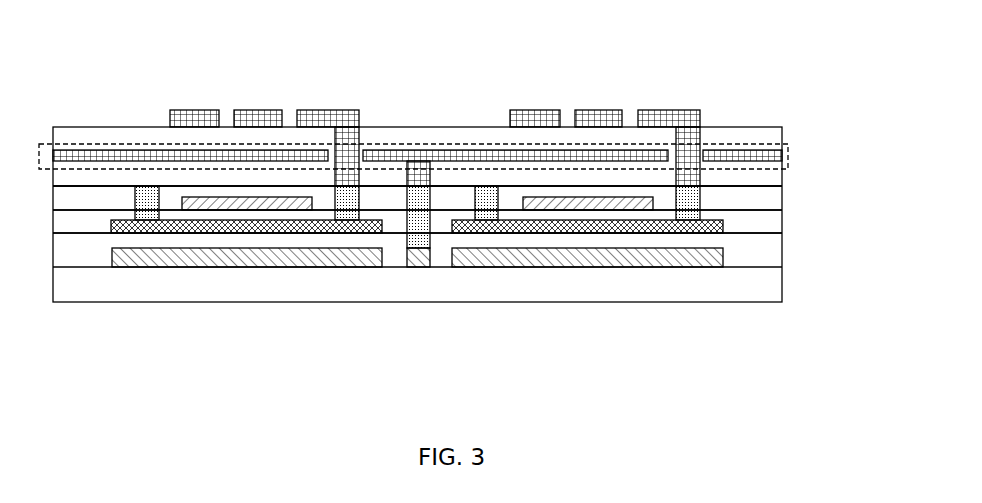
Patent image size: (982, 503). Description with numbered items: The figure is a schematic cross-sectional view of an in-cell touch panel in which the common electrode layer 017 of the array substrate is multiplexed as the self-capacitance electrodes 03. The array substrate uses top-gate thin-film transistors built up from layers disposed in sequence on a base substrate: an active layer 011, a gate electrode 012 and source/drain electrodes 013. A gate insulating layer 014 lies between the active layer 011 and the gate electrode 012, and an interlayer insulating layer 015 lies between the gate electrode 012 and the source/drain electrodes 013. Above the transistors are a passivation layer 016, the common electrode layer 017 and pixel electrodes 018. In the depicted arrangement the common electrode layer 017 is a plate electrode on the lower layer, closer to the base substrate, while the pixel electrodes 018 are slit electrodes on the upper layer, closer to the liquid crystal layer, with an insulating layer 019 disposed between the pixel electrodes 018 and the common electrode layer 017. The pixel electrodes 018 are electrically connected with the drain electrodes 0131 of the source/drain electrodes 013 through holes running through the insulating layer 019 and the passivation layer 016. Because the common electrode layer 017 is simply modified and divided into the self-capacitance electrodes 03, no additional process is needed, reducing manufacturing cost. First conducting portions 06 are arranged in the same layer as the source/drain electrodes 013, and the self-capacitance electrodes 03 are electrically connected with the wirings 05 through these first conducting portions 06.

The self-capacitance electrodes 03 is at (437, 153).
The wirings 05 is at (417, 249).
The first conducting portions 06 is at (430, 220).
The active layer 011 is at (580, 221).
The gate electrode 012 is at (643, 211).
The source/drain electrodes 013 is at (335, 220).
The drain electrodes 0131 is at (698, 212).
The gate insulating layer 014 is at (762, 221).
The interlayer insulating layer 015 is at (762, 198).
The passivation layer 016 is at (773, 177).
The common electrode layer 017 is at (788, 158).
The pixel electrodes 018 is at (310, 112).
The insulating layer 019 is at (117, 128).